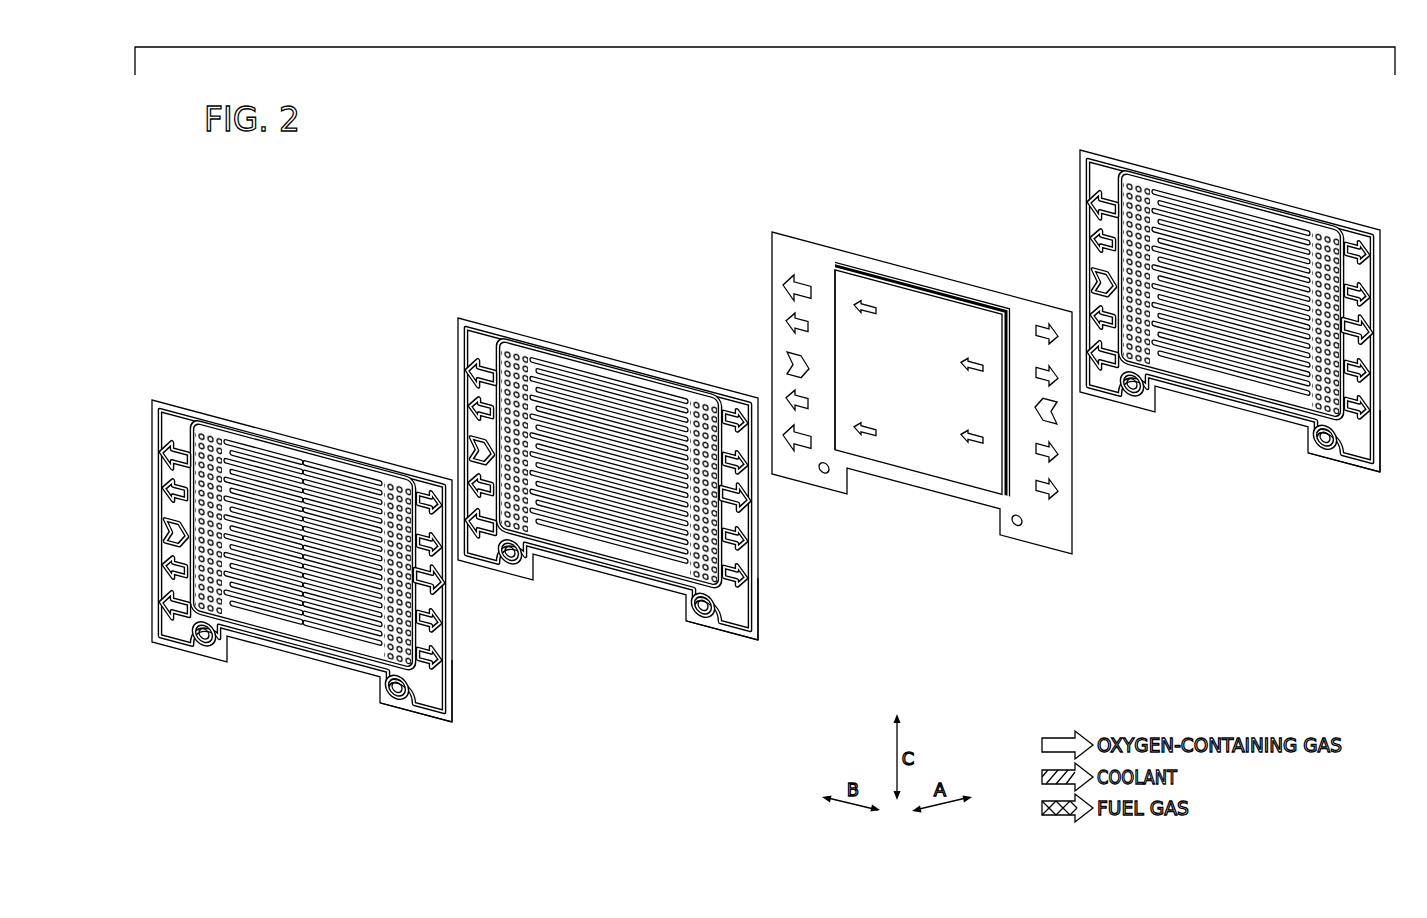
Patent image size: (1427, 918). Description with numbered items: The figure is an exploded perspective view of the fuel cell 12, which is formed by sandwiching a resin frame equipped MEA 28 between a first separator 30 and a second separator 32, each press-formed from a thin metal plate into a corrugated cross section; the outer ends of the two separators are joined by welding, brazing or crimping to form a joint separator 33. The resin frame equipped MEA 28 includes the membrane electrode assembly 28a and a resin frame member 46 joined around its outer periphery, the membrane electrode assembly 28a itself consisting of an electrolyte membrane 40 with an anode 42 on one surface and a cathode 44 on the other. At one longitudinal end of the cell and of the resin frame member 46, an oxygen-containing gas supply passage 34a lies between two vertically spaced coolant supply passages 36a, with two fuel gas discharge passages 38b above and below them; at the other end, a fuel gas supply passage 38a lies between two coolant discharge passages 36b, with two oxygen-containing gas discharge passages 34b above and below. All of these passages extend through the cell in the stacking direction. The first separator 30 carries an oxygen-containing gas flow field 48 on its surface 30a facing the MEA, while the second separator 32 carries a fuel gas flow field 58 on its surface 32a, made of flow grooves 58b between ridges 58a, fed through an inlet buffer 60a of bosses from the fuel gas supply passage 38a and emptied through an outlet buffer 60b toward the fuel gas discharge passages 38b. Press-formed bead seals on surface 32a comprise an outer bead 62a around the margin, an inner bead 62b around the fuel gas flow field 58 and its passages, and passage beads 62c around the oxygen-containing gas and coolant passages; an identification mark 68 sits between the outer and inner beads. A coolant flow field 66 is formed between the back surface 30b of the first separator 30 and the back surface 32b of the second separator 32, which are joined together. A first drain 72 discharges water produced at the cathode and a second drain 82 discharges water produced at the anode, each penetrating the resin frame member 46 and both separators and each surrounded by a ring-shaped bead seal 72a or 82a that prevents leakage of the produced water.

The fuel cell 12 is at (735, 232).
The resin frame equipped MEA 28 is at (922, 350).
The membrane electrode assembly 28a is at (915, 278).
The first separator 30 is at (738, 374).
The surface of first separator 30a is at (752, 642).
The surface of first separator 30b is at (737, 614).
The second separator 32 is at (241, 416).
The surface of second separator 32a is at (430, 706).
The surface of second separator 32b is at (446, 716).
The joint separator 33 is at (766, 414).
The oxygen-containing gas supply passage 34a is at (445, 598).
The oxygen-containing gas discharge passages 34b is at (1122, 118).
The coolant supply passages 36a is at (440, 560).
The coolant discharge passages 36b is at (182, 478).
The fuel gas supply passage 38a is at (215, 545).
The fuel gas discharge passages 38b is at (1372, 422).
The electrolyte membrane 40 is at (937, 465).
The anode 42 is at (875, 282).
The cathode 44 is at (915, 462).
The resin frame member 46 is at (850, 311).
The oxygen-containing gas flow field 48 is at (632, 412).
The fuel gas flow field 58 is at (727, 410).
The ridges 58a is at (295, 640).
The flow grooves 58b is at (782, 411).
The inlet buffer 60a is at (205, 432).
The outlet buffer 60b is at (405, 492).
The outer bead 62a is at (1245, 395).
The inner bead 62b is at (1216, 386).
The passage beads 62c is at (1150, 218).
The coolant flow field 66 is at (592, 400).
The identification mark 68 is at (165, 410).
The first drain 72 is at (207, 643).
The bead seal 72a is at (222, 655).
The second drain 82 is at (398, 700).
The bead seal 82a is at (393, 693).